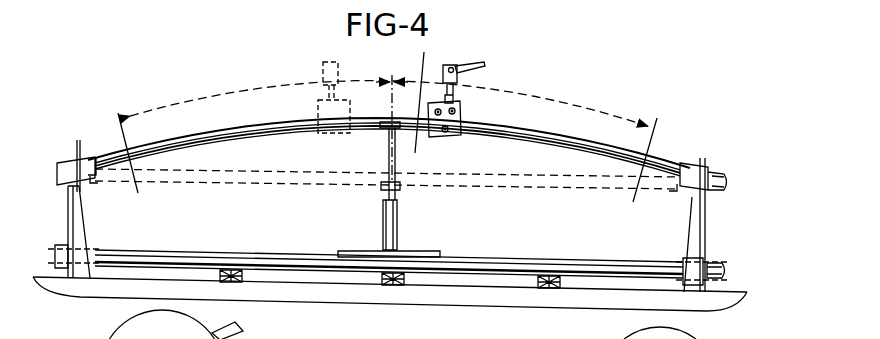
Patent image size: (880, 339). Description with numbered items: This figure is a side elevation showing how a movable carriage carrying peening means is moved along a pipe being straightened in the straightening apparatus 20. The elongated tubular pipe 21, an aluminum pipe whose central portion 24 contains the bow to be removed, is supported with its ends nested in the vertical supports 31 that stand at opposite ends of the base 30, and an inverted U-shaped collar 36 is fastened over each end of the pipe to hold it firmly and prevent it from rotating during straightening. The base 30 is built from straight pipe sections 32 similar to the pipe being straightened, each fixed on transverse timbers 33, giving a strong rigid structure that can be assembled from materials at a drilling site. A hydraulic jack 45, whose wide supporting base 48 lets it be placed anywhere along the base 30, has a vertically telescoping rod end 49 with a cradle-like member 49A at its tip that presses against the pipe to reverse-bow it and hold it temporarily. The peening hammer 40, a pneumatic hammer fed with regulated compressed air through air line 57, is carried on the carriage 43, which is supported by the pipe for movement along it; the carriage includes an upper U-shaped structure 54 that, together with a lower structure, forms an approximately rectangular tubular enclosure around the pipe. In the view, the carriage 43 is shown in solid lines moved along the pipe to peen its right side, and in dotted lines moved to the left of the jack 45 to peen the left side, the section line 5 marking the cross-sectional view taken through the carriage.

The section line 5- 5 is at (424, 52).
The straightening apparatus 20 is at (743, 175).
The elongated tubular pipe 21 is at (658, 163).
The central portion 24 is at (498, 130).
The base 30 is at (616, 246).
The vertical support 31 is at (66, 226).
The straight pipe section 32 is at (485, 262).
The transverse timber 33 is at (243, 274).
The U-shaped collar 36 is at (78, 148).
The peening hammer 40 is at (305, 78).
The carriage 43 is at (461, 113).
The hydraulic jack 45 is at (397, 217).
The supporting base 48 is at (358, 252).
The telescoping rod end 49 is at (387, 160).
The cradle-like member 49A is at (382, 128).
The upper U-shaped structure 54 is at (483, 64).
The compressed air line 57 is at (760, 332).